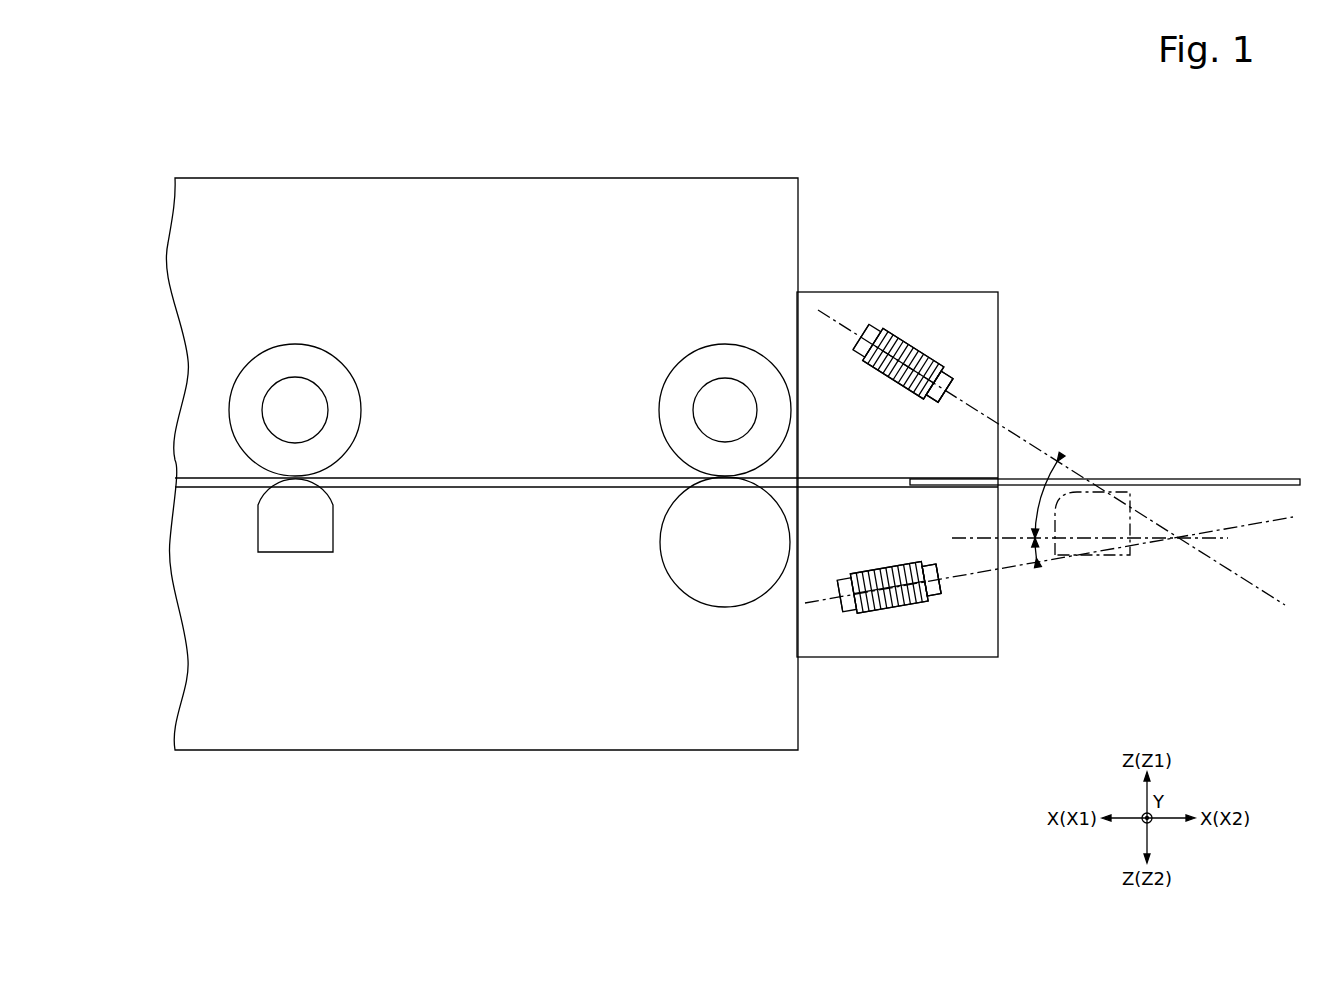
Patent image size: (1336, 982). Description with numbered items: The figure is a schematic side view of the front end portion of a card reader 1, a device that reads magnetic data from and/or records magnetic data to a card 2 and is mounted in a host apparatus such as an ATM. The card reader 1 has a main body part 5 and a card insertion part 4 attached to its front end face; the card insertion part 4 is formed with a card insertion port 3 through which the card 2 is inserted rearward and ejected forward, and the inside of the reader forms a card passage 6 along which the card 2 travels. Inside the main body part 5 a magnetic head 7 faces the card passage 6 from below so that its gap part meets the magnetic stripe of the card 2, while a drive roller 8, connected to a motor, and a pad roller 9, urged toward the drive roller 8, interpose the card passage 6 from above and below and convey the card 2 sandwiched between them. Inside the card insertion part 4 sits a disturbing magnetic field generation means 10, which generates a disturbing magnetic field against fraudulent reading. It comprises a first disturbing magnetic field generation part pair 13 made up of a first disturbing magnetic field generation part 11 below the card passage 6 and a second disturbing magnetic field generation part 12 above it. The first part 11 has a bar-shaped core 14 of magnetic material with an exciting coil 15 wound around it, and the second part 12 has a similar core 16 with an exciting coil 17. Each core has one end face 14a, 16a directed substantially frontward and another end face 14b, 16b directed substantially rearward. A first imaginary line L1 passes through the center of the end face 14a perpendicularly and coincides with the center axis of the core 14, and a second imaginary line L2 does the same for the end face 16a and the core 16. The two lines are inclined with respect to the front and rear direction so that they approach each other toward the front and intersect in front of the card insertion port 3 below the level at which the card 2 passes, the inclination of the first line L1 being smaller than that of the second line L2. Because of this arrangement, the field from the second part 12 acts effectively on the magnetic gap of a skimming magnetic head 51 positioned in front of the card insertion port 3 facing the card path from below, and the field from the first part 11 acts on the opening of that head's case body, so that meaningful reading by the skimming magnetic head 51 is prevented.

The card reader 1 is at (998, 194).
The card 2 is at (1243, 479).
The card insertion port 3 is at (1017, 466).
The card insertion part 4 is at (982, 292).
The main body part 5 is at (737, 178).
The card passage 6 is at (497, 477).
The magnetic head 7 is at (297, 553).
The drive roller 8 is at (295, 344).
The pad roller 9 is at (683, 592).
The disturbing magnetic field generation means 10 is at (860, 264).
The first disturbing magnetic field generation part 11 is at (894, 652).
The second disturbing magnetic field generation part 12 is at (925, 305).
The first disturbing magnetic field generation part pair 13 is at (861, 255).
The core 14 is at (928, 560).
The one end face 14a is at (938, 585).
The other end face 14b is at (838, 603).
The exciting coil 15 is at (875, 567).
The core 16 is at (930, 403).
The one end face 16a is at (942, 403).
The other end face 16b is at (857, 342).
The exciting coil 17 is at (888, 385).
The skimming magnetic head 51 is at (1118, 558).
The first imaginary line L1 is at (1268, 522).
The second imaginary line L2 is at (1247, 583).